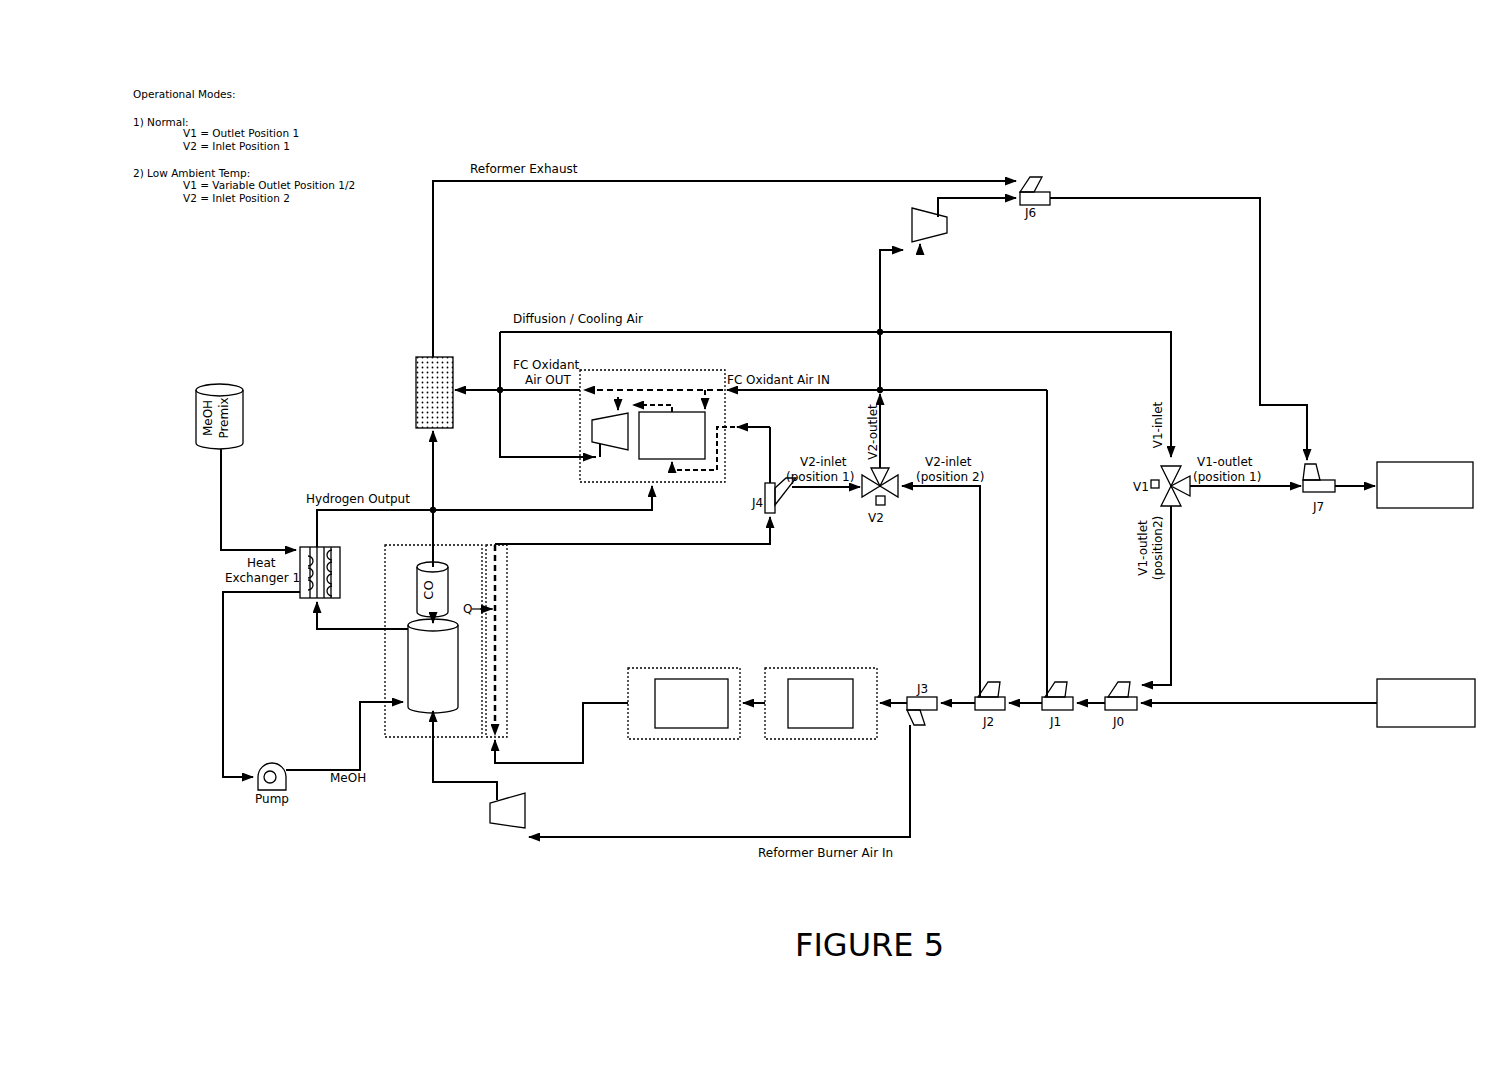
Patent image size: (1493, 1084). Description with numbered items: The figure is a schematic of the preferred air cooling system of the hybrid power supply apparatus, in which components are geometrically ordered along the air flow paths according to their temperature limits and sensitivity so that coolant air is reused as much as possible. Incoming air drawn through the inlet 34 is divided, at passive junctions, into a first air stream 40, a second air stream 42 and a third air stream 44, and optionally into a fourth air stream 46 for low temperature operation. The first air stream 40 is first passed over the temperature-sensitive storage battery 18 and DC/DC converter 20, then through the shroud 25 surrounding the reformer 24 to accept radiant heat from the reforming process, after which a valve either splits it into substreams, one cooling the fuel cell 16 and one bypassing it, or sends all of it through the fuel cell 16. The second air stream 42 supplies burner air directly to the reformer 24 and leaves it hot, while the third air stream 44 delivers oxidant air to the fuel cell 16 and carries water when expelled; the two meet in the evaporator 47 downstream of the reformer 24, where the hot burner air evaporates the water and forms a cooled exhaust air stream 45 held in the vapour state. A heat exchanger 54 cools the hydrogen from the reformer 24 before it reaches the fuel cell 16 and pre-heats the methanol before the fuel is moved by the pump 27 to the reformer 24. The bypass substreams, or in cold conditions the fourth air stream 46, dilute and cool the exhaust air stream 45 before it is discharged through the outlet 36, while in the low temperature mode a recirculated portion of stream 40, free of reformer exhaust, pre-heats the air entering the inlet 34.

The fuel cell 16 is at (678, 410).
The storage battery 18 is at (820, 728).
The DC/DC converter 20 is at (690, 728).
The reformer 24 is at (425, 710).
The reformer shroud 25 is at (507, 638).
The pump 27 is at (285, 782).
The inlet 34 is at (1425, 679).
The outlet 36 is at (1425, 462).
The first air stream 40 is at (906, 698).
The second air stream 42 is at (432, 463).
The third air stream 44 is at (456, 388).
The exhaust air stream 45 is at (598, 181).
The fourth air stream 46 is at (980, 573).
The evaporator 47 is at (414, 357).
The heat exchanger 54 is at (316, 546).